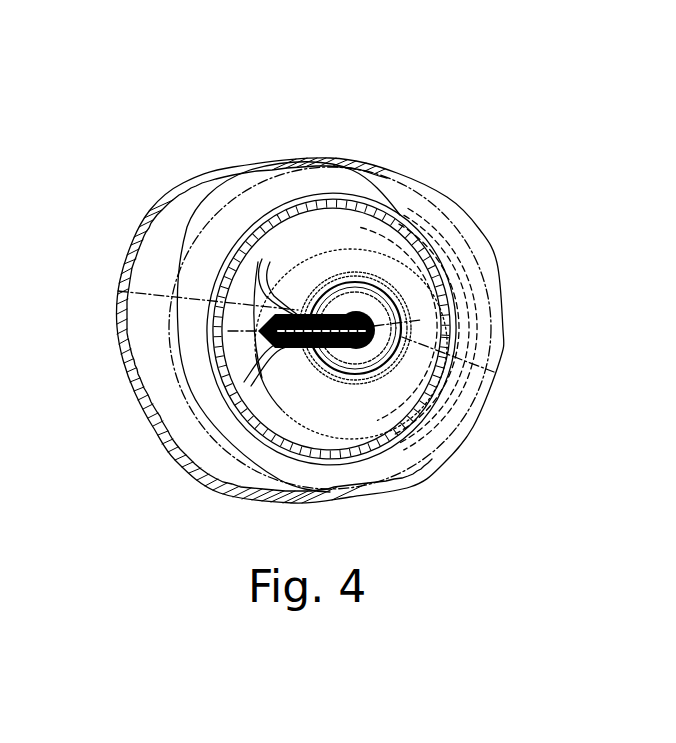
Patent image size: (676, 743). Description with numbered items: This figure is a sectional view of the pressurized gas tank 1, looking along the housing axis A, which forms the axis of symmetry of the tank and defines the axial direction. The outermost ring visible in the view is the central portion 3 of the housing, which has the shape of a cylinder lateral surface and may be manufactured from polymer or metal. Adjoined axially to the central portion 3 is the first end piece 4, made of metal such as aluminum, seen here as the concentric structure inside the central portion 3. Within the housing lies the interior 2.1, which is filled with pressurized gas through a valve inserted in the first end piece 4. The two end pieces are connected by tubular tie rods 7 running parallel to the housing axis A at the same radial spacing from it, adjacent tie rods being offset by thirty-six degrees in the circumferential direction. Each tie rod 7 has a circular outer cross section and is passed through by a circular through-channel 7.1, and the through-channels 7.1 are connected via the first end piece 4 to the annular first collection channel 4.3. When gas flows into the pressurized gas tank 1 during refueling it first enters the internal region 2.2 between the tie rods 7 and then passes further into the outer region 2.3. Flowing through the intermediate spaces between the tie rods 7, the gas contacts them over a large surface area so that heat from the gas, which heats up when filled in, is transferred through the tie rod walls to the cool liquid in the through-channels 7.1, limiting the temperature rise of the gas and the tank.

The pressurized gas tank 1 is at (373, 101).
The central portion 3 is at (232, 176).
The through-channel 7.1 is at (204, 266).
The first end piece 4 is at (350, 194).
The first collection channel 4.3 is at (381, 258).
The outer region 2.3 is at (436, 288).
The interior 2.1 is at (365, 263).
The internal region 2.2 is at (260, 331).
The housing axis A is at (262, 336).
The tie rod 7 is at (270, 318).